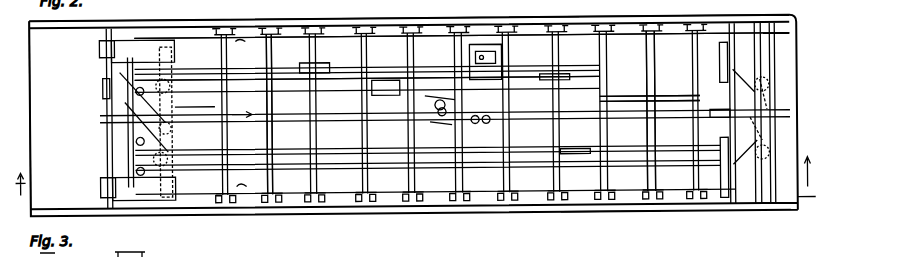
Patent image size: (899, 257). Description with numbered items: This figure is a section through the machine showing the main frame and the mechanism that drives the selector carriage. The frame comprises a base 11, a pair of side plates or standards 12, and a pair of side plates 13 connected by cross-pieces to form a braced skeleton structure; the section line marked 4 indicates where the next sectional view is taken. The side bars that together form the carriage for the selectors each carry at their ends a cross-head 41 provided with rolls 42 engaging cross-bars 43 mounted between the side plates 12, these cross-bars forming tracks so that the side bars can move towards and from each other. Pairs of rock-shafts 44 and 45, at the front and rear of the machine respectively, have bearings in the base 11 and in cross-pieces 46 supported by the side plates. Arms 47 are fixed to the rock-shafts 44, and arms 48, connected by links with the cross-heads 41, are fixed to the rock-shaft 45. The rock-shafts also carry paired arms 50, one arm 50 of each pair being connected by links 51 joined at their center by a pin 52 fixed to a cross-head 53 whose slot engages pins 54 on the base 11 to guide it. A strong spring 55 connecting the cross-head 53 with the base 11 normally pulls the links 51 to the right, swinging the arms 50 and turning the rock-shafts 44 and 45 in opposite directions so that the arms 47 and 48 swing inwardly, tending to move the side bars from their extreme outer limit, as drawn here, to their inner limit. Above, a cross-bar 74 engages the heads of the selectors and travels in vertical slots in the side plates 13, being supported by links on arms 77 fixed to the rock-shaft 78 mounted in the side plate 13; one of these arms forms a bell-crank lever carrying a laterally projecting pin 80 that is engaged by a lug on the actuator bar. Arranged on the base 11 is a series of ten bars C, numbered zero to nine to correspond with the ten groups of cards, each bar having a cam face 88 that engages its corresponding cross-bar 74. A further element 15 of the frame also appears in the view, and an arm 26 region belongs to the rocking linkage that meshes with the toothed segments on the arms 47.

The section line 4- 4 is at (414, 187).
The base 11 is at (318, 24).
The side plates or standards 12 is at (92, 26).
The side plates 13 is at (580, 207).
The rail 15 is at (556, 24).
The bracket 26 is at (157, 38).
The cross-head 41 is at (115, 160).
The rolls 42 is at (104, 81).
The cross-bars 43 is at (108, 58).
The rock-shafts 44 is at (176, 80).
The rock-shafts 45 is at (766, 84).
The cross-pieces 46 is at (128, 146).
The arms 47 is at (150, 82).
The arms 48 is at (740, 73).
The arms 50 is at (150, 112).
The links 51 is at (214, 105).
The pin 52 is at (435, 78).
The cross-head 53 is at (490, 114).
The pins 54 is at (438, 96).
The spring 55 is at (620, 110).
The cross-bar 74 is at (268, 52).
The arms 77 is at (243, 37).
The rock-shaft 78 is at (672, 70).
The pin 80 is at (632, 207).
The cam face 88 is at (400, 78).
The bars C is at (238, 116).